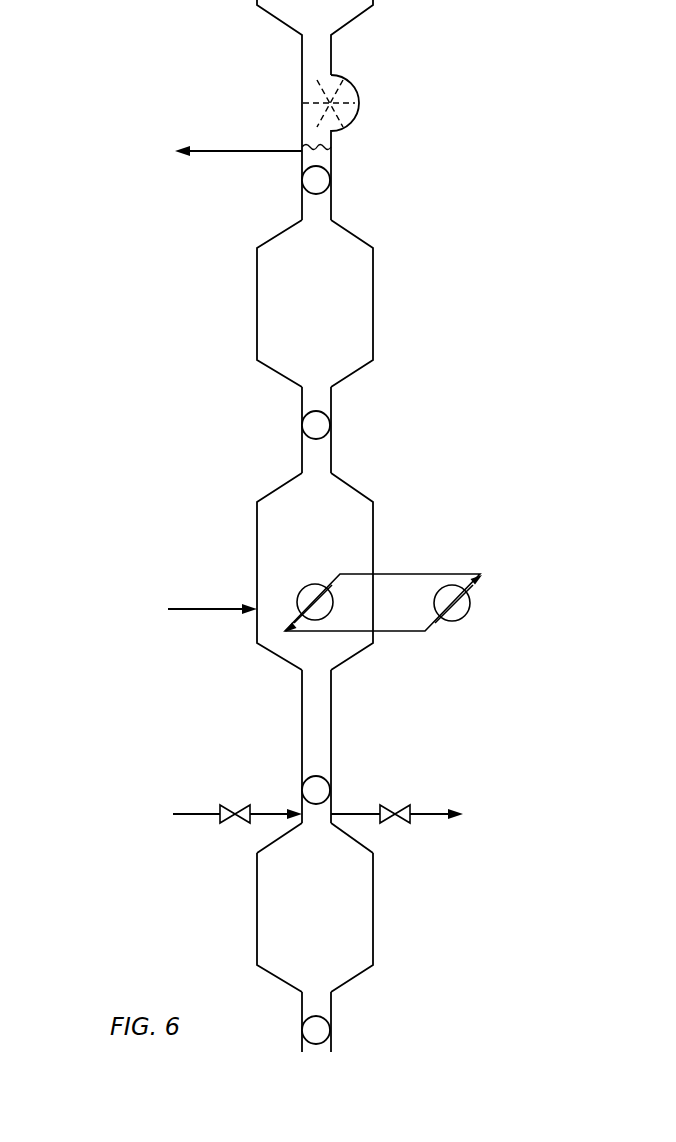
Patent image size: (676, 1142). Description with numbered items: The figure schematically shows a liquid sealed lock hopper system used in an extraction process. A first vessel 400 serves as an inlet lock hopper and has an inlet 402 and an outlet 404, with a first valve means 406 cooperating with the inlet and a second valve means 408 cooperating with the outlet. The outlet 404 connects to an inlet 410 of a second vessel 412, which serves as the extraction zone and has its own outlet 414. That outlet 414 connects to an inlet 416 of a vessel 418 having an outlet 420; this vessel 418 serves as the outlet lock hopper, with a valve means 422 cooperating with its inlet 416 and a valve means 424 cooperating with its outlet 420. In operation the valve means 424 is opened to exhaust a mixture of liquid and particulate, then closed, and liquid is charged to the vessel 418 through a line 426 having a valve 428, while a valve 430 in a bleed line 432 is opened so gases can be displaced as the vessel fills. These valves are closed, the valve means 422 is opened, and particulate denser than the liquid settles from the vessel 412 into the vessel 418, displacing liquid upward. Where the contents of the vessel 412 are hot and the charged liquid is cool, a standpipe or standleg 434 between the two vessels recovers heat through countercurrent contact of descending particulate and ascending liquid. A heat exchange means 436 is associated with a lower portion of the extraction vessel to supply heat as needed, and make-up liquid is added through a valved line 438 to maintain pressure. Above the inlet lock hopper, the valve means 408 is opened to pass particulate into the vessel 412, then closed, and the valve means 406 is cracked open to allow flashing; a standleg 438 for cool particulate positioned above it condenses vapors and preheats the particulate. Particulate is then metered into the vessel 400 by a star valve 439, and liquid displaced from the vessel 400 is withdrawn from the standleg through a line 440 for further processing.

The first vessel 400 is at (373, 293).
The inlet 402 is at (331, 220).
The outlet 404 is at (331, 388).
The first valve means 406 is at (342, 170).
The second valve means 408 is at (342, 423).
The inlet 410 is at (331, 475).
The second vessel 412 is at (373, 547).
The outlet 414 is at (332, 667).
The inlet 416 is at (331, 825).
The vessel 418 is at (373, 902).
The outlet 420 is at (331, 992).
The valve means 422 is at (342, 784).
The valve means 424 is at (342, 1030).
The line 426 is at (272, 811).
The valve 428 is at (222, 805).
The valve 430 is at (410, 805).
The bleed line 432 is at (433, 808).
The standpipe 434 is at (331, 718).
The heat exchange means 436 is at (451, 562).
The standleg 438 is at (373, 10).
The star valve 439 is at (358, 92).
The line 440 is at (240, 127).